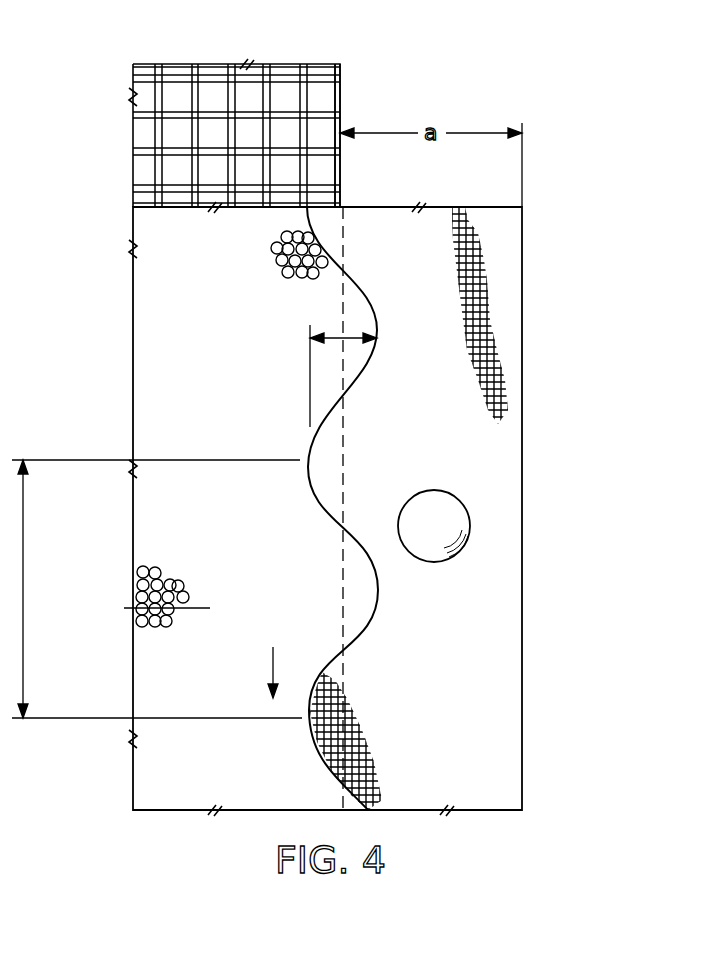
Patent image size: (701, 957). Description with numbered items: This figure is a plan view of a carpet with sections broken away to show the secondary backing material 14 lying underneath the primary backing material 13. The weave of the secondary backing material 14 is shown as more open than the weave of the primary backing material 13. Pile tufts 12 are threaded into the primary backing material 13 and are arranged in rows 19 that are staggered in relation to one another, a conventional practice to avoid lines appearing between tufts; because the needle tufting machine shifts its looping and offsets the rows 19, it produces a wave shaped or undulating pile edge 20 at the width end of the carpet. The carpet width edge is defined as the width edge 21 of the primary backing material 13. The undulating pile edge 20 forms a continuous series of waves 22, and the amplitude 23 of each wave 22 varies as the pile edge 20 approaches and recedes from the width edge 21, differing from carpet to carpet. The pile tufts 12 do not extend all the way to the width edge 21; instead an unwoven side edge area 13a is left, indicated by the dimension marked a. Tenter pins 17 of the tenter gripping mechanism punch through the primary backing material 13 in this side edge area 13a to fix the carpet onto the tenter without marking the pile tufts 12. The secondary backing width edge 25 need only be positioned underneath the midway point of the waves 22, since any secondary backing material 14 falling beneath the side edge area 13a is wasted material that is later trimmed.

The pile tufts 12 is at (145, 590).
The primary backing material 13 is at (530, 536).
The side edge area 13a is at (480, 683).
The secondary backing material 14 is at (308, 63).
The tenter pins 17 is at (458, 507).
The rows 19 is at (197, 605).
The undulating pile edge 20 is at (363, 287).
The width edge 21 is at (523, 283).
The waves 22 is at (154, 589).
The amplitude 23 is at (333, 337).
The secondary backing width edge 25 is at (340, 95).